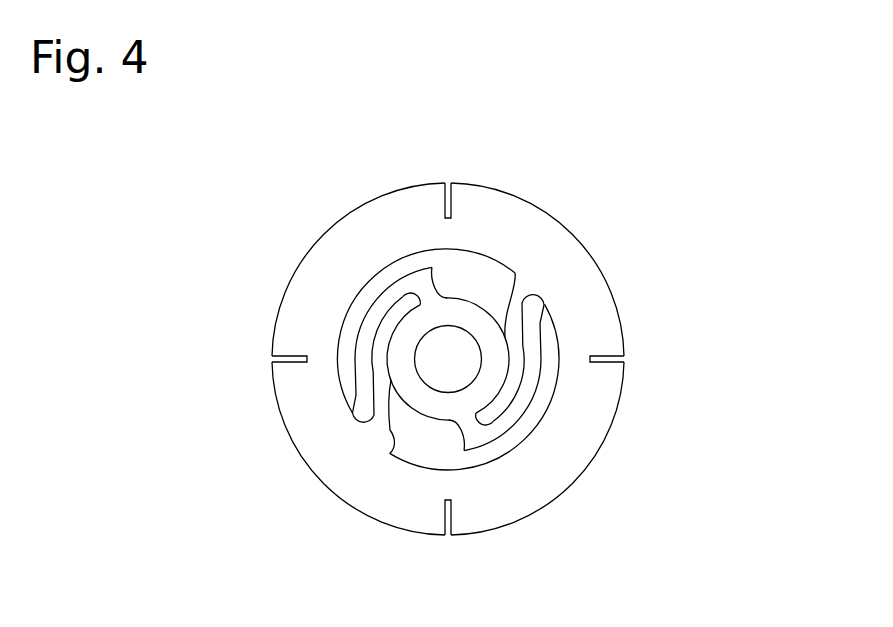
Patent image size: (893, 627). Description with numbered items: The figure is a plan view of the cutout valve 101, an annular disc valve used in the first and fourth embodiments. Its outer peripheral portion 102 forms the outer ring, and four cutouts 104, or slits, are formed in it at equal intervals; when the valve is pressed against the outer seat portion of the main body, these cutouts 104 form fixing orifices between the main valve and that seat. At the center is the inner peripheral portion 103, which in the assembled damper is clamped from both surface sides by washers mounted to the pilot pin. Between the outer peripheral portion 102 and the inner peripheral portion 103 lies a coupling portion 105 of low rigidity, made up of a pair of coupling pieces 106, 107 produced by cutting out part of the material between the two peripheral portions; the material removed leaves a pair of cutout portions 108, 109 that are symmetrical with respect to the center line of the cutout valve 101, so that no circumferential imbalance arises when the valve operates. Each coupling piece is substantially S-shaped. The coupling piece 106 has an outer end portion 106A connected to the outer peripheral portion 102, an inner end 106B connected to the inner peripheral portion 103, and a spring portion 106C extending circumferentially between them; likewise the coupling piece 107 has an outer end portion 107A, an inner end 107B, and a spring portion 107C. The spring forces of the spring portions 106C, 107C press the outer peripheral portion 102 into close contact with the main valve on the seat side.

The cutout valve 101 is at (626, 216).
The outer peripheral portion 102 is at (573, 428).
The inner peripheral portion 103 is at (440, 448).
The cutout 104 is at (452, 210).
The coupling portion 105 is at (481, 241).
The coupling piece 106 is at (353, 318).
The outer end portion 106A is at (396, 444).
The inner end 106B is at (433, 285).
The spring portion 106C is at (385, 300).
The coupling piece 107 is at (532, 429).
The outer end portion 107A is at (530, 296).
The inner end 107B is at (458, 446).
The spring portion 107C is at (533, 375).
The cutout portion 108 is at (488, 272).
The cutout portion 109 is at (440, 448).